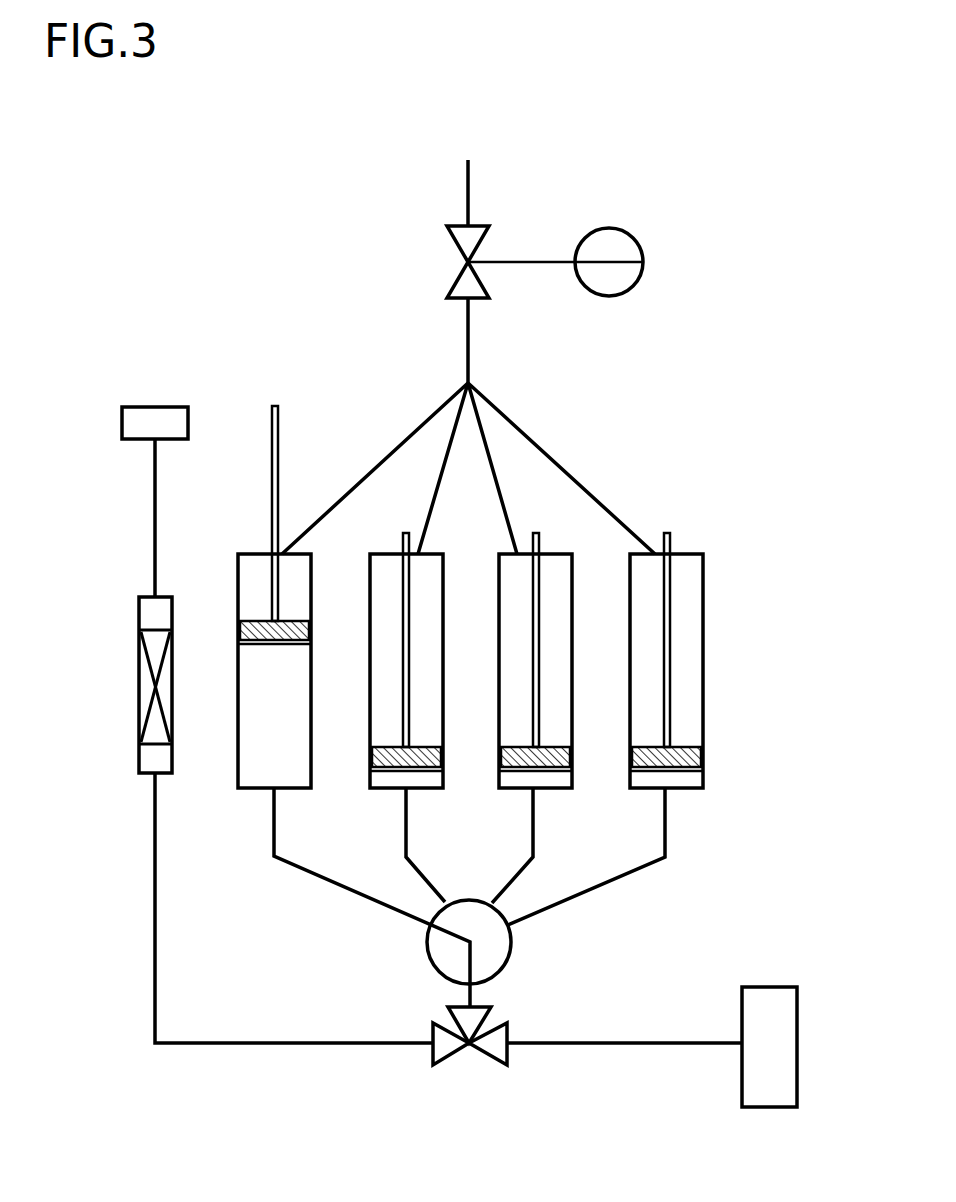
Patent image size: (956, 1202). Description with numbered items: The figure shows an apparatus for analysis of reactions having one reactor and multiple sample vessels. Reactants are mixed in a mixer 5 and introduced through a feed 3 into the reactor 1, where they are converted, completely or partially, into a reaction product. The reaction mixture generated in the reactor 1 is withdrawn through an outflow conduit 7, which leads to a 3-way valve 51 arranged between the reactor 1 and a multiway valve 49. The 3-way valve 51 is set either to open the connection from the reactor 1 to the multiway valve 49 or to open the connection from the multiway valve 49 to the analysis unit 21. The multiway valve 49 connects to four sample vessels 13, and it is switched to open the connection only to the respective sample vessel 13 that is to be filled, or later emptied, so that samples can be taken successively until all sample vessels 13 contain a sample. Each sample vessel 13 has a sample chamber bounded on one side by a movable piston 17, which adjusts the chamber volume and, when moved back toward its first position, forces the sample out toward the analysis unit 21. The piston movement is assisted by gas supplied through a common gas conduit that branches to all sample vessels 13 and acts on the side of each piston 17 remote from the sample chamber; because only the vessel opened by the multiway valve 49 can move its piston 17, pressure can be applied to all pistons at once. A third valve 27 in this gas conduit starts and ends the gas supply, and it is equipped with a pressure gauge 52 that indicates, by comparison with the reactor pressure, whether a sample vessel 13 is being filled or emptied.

The reactor 1 is at (137, 688).
The feed 3 is at (153, 513).
The mixer 5 is at (150, 407).
The outflow conduit 7 is at (153, 918).
The sample vessel 13 is at (249, 553).
The piston 17 is at (303, 633).
The analysis unit 21 is at (772, 987).
The third valve 27 is at (447, 238).
The multiway valve 49 is at (510, 962).
The 3-way valve 51 is at (445, 1065).
The pressure gauge 52 is at (640, 240).